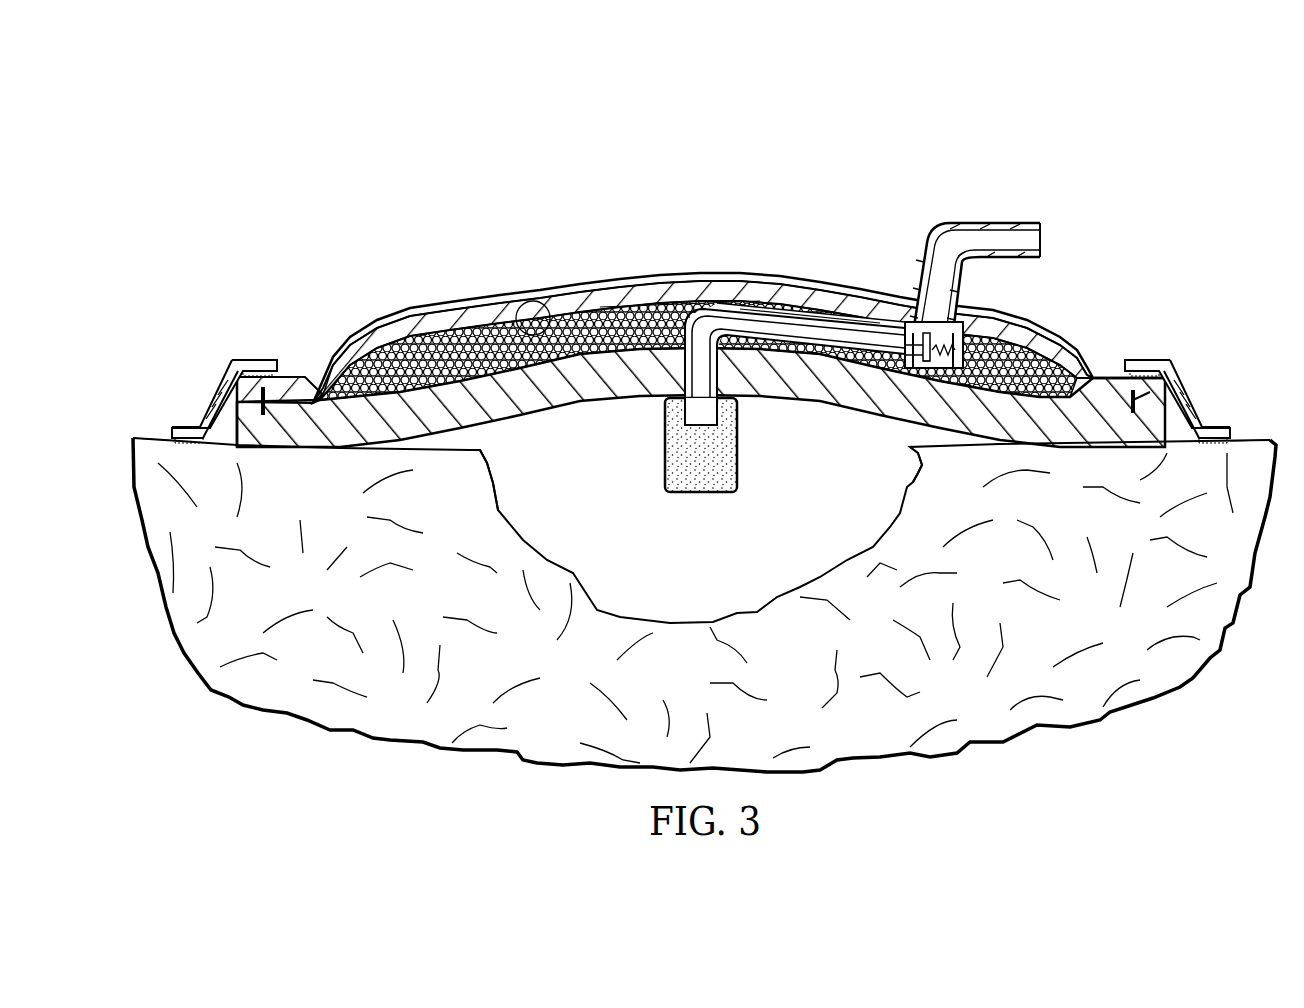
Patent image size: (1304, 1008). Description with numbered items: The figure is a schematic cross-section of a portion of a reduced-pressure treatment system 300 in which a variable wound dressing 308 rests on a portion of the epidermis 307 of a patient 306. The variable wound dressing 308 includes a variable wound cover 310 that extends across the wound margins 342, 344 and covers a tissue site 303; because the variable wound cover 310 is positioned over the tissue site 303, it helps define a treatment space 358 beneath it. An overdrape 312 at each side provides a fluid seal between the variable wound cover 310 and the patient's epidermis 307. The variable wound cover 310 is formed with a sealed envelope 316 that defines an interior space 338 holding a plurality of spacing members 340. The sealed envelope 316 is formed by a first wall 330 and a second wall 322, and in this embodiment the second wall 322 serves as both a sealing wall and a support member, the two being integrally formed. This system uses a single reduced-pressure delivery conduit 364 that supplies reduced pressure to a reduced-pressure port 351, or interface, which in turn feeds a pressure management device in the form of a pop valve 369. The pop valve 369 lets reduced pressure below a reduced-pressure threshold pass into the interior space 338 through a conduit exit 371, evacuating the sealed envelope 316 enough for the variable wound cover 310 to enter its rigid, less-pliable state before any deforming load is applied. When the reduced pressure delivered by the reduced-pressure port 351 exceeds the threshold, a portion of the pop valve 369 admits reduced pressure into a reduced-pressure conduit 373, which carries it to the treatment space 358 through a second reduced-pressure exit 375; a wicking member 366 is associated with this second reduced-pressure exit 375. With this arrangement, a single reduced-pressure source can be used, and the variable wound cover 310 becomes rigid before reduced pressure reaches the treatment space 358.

The reduced-pressure treatment system 300 is at (1188, 130).
The tissue site 303 is at (678, 626).
The patient 306 is at (1250, 433).
The epidermis 307 is at (150, 433).
The variable wound dressing 308 is at (328, 320).
The variable wound cover 310 is at (435, 305).
The overdrape 312 is at (230, 372).
The sealed envelope 316 is at (383, 320).
The second wall 322 is at (300, 448).
The first wall 330 is at (460, 310).
The interior space 338 is at (550, 312).
The spacing members 340 is at (627, 305).
The wound margin 342 is at (470, 452).
The wound margin 344 is at (918, 452).
The reduced-pressure port 351 is at (988, 222).
The treatment space 358 is at (672, 562).
The reduced-pressure delivery conduit 364 is at (1025, 222).
The wicking member 366 is at (663, 473).
The pop valve 369 is at (920, 302).
The conduit exit 371 is at (935, 370).
The reduced-pressure conduit 373 is at (783, 316).
The second reduced-pressure exit 375 is at (737, 410).